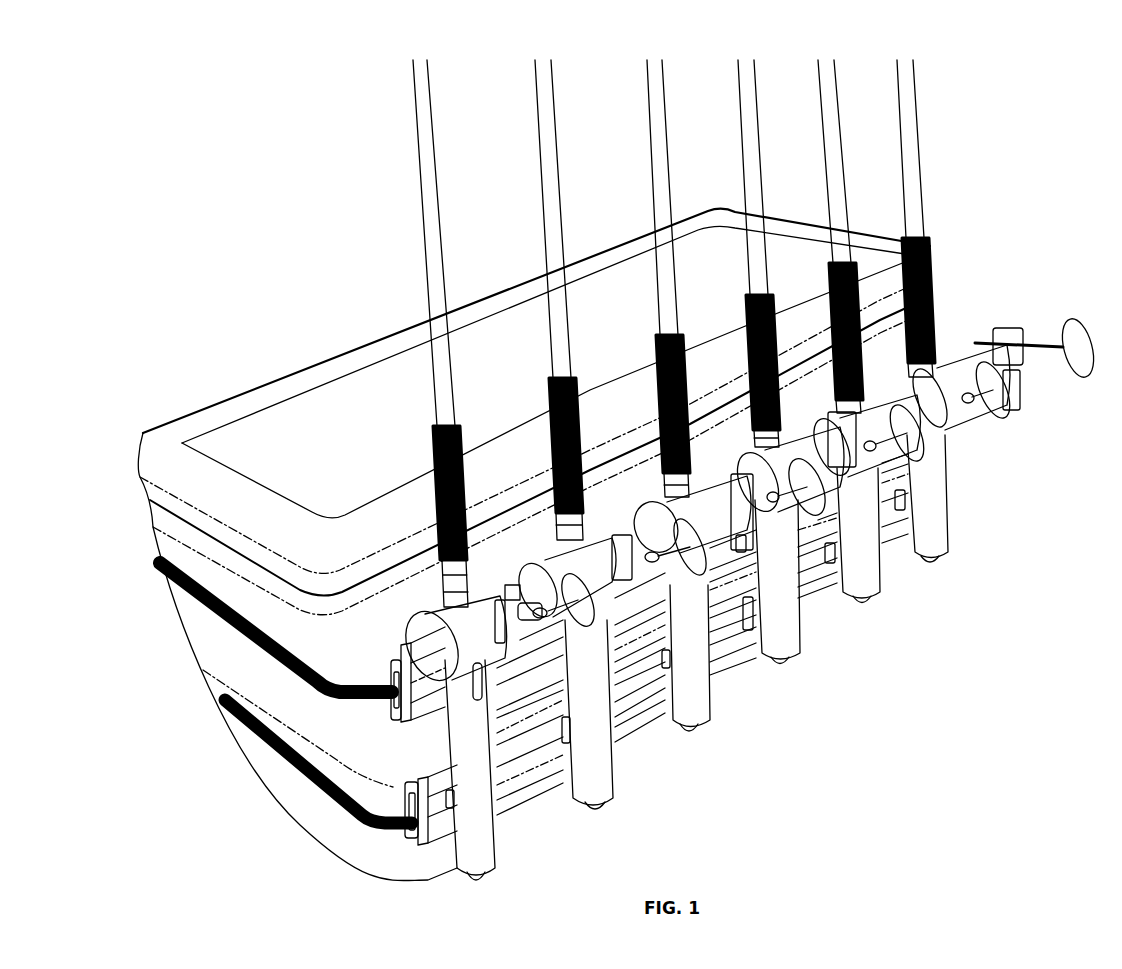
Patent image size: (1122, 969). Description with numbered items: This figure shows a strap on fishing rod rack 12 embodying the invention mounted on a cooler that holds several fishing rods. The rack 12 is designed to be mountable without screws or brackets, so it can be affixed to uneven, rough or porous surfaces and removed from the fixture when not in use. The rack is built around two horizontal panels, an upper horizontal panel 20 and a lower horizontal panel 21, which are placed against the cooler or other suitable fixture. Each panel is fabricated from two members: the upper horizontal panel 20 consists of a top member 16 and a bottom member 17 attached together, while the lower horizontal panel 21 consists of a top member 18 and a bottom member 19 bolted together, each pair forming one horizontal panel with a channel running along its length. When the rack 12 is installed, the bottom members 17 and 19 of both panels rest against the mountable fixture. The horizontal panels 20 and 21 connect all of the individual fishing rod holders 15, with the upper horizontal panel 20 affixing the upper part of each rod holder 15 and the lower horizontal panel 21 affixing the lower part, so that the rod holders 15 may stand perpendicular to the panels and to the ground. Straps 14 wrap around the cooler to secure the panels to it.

The strap on fishing rod rack 12 is at (481, 412).
The strap 14 is at (294, 686).
The fishing rod holder 15 is at (500, 838).
The top member 16 is at (420, 724).
The bottom member 17 is at (390, 652).
The top member 18 is at (437, 855).
The bottom member 19 is at (410, 836).
The upper horizontal panel 20 is at (393, 606).
The lower horizontal panel 21 is at (625, 675).